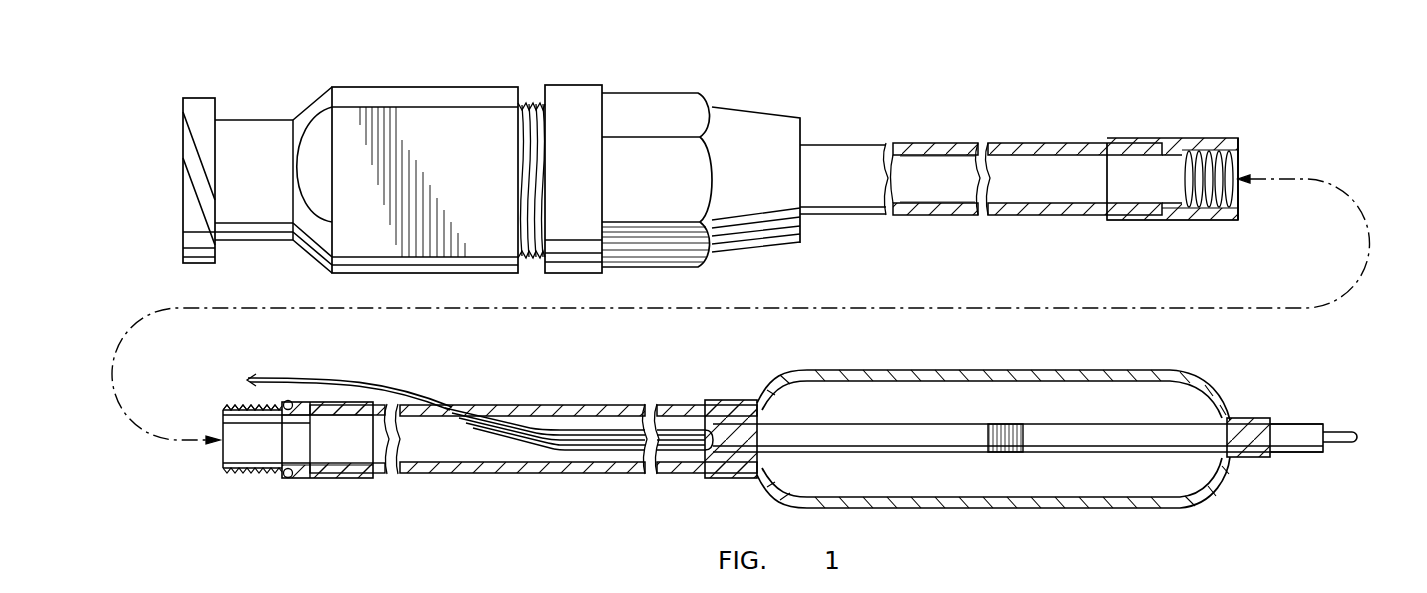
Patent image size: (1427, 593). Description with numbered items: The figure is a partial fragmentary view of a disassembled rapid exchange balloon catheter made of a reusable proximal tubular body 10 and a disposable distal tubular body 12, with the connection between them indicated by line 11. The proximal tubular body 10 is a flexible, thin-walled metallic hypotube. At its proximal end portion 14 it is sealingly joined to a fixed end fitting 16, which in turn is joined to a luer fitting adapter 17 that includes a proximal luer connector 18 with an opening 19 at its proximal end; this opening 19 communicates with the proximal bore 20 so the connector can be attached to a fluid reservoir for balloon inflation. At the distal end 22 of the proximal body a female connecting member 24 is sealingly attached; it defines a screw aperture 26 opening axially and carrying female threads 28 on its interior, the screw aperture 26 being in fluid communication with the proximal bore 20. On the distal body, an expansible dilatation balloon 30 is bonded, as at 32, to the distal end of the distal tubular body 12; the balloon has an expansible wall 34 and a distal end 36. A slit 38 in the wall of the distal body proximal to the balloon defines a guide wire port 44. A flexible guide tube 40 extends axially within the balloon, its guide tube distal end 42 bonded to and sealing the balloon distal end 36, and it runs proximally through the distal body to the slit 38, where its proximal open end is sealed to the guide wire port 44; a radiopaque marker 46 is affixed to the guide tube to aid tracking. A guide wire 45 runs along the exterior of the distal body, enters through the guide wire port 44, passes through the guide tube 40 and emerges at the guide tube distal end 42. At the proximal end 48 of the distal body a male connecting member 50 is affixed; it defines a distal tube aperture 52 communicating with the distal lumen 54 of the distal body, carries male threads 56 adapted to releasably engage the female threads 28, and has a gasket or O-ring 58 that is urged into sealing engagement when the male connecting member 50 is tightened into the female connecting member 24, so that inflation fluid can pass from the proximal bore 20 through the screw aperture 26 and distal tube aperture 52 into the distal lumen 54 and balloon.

The reusable proximal tubular body 10 is at (938, 110).
The line 11 is at (1338, 181).
The disposable distal tubular body 12 is at (578, 490).
The proximal end portion 14 is at (735, 92).
The fixed end fitting 16 is at (800, 231).
The luer fitting adapter 17 is at (445, 87).
The proximal luer connector 18 is at (198, 97).
The opening 19 is at (185, 160).
The proximal bore 20 is at (935, 194).
The distal end 22 is at (1165, 128).
The female connecting member 24 is at (1180, 221).
The screw aperture 26 is at (1239, 170).
The female threads 28 is at (1210, 151).
The expansible dilatation balloon 30 is at (930, 356).
The bond 32 is at (725, 401).
The expansible wall 34 is at (1105, 370).
The distal end 36 is at (1240, 418).
The slit 38 is at (510, 410).
The flexible guide tube 40 is at (1080, 440).
The guide tube distal end 42 is at (1290, 453).
The guide wire port 44 is at (465, 407).
The guide wire 45 is at (360, 377).
The radiopaque marker 46 is at (1005, 425).
The proximal end 48 is at (330, 490).
The male connecting member 50 is at (345, 480).
The distal tube aperture 52 is at (222, 450).
The distal lumen 54 is at (390, 457).
The male threads 56 is at (245, 405).
The gasket or O-ring 58 is at (284, 479).